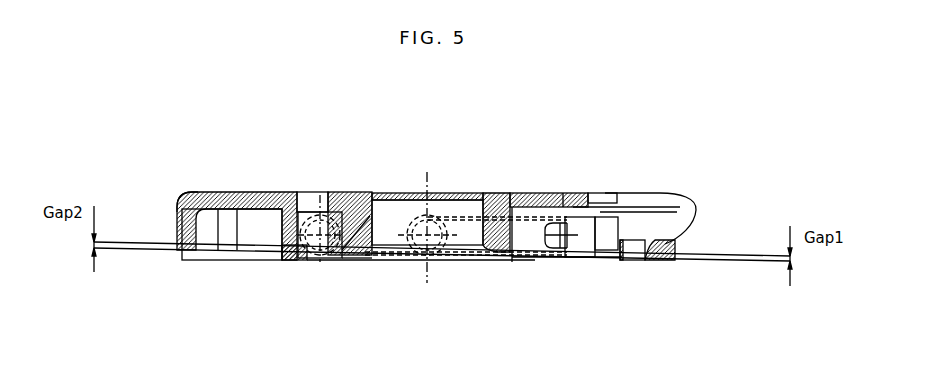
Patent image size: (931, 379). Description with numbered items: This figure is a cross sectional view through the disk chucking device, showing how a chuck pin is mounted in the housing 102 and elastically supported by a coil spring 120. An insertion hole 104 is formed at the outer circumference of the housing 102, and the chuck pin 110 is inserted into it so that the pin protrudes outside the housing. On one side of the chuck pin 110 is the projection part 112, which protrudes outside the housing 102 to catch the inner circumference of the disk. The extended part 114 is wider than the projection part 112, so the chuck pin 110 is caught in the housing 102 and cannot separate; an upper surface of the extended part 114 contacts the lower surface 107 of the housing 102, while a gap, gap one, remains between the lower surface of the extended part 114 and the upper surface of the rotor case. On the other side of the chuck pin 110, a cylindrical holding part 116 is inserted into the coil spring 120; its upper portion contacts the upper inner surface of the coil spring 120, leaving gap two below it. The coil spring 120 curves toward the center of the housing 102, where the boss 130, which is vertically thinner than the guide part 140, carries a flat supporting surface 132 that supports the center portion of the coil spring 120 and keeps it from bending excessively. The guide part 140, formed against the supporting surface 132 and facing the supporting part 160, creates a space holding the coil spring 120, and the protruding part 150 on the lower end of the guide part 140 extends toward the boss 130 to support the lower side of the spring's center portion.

The housing 102 is at (252, 197).
The insertion hole 104 is at (662, 258).
The lower surface 107 is at (568, 193).
The chuck pin 110 is at (690, 70).
The projection part 112 is at (668, 213).
The extended part 114 is at (618, 215).
The holding part 116 is at (578, 213).
The coil spring 120 is at (467, 257).
The boss 130 is at (355, 200).
The supporting surface 132 is at (367, 258).
The guide part 140 is at (285, 230).
The protruding part 150 is at (302, 258).
The supporting part 160 is at (183, 200).